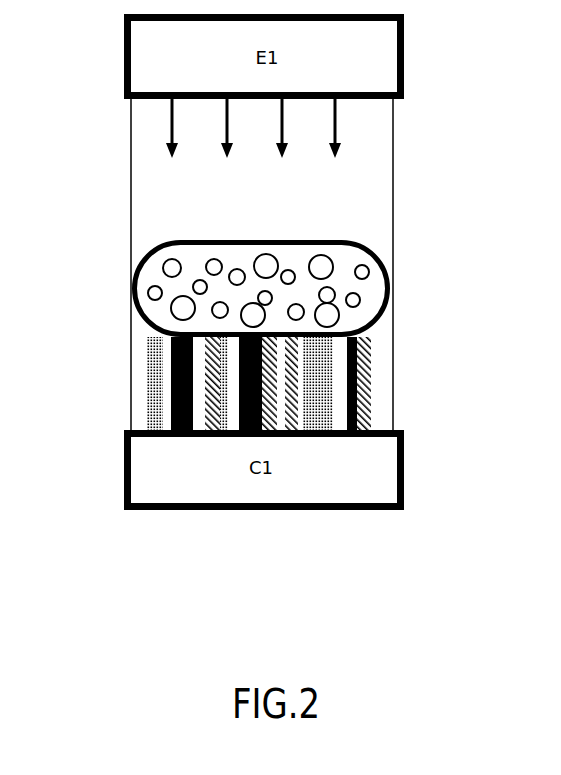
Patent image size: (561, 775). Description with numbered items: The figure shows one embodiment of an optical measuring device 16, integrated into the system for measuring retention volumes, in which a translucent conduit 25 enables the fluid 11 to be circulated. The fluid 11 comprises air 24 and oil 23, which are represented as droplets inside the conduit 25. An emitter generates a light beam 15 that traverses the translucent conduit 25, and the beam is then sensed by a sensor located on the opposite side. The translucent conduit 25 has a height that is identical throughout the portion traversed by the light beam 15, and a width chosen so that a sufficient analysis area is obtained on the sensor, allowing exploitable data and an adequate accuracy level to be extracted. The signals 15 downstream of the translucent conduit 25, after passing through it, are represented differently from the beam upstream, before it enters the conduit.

The fluid 11 is at (304, 257).
The light beam 15 is at (340, 120).
The optical measuring device 16 is at (114, 167).
The oil 23 is at (263, 257).
The air 24 is at (200, 260).
The translucent conduit 25 is at (114, 266).